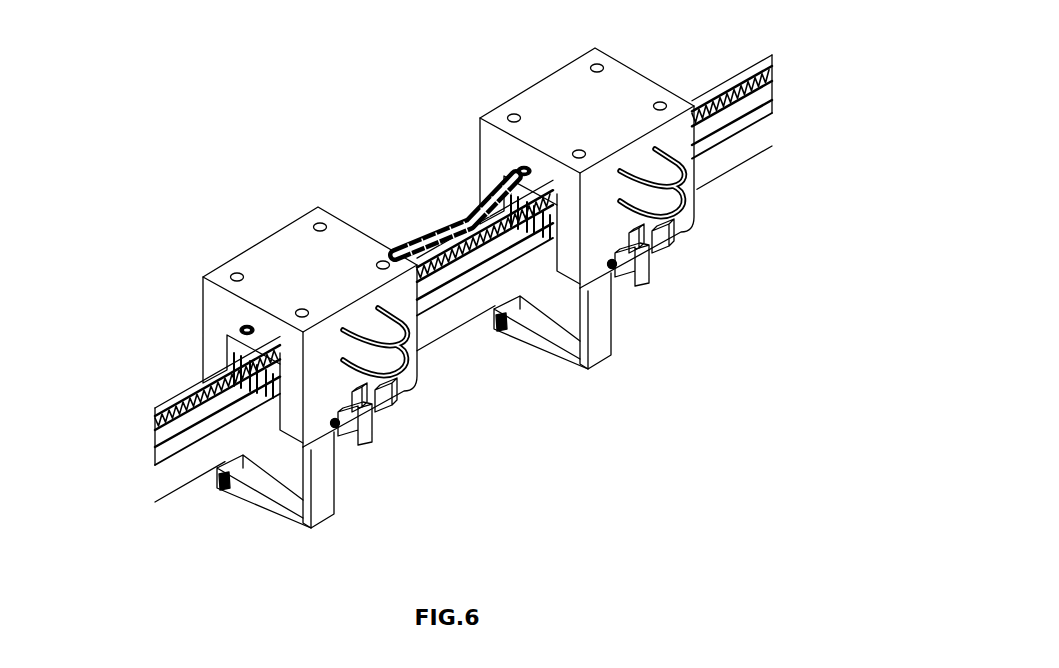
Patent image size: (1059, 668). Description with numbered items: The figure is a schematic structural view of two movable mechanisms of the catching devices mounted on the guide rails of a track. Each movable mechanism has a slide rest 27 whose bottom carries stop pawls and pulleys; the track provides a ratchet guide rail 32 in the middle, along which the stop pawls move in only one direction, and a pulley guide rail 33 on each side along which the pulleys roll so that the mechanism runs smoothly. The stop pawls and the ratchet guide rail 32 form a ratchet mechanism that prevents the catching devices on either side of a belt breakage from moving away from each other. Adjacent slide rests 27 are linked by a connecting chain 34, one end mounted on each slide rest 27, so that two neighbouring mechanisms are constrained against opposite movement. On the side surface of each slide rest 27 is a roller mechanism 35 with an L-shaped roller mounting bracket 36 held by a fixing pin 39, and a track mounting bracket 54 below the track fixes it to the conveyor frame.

The slide rest 27 is at (293, 263).
The ratchet guide rail 32 is at (170, 405).
The pulley guide rail 33 is at (207, 388).
The connecting chain 34 is at (471, 221).
The roller mechanism 35 is at (369, 441).
The L-shaped roller mounting bracket 36 is at (646, 280).
The fixing pin 39 is at (377, 421).
The track mounting bracket 54 is at (597, 338).